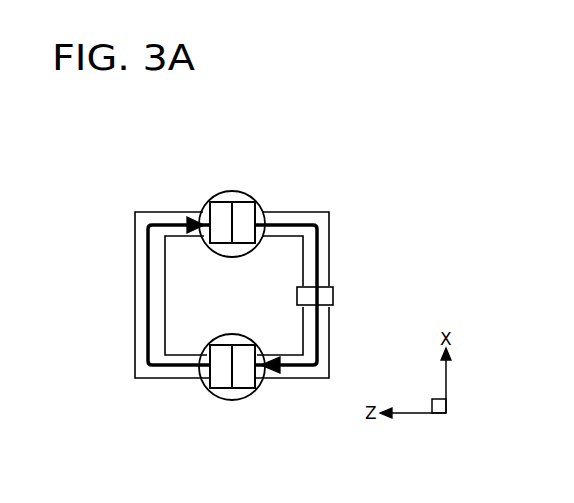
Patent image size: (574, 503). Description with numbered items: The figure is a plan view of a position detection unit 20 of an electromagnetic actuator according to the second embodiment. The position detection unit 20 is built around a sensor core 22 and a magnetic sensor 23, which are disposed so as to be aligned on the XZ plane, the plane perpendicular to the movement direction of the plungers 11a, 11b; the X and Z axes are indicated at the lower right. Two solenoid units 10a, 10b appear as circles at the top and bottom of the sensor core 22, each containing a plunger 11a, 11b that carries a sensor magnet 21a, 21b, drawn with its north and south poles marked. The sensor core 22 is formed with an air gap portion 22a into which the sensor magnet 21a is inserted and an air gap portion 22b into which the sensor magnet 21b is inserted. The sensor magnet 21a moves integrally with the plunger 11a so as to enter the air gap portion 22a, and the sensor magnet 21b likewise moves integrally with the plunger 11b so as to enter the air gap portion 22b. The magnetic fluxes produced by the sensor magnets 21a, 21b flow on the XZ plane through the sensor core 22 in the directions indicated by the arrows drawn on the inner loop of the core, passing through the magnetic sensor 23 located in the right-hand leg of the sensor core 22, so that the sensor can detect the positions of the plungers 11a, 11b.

The solenoid unit 10a is at (227, 401).
The solenoid unit 10b is at (219, 169).
The plunger 11a is at (236, 393).
The plunger 11b is at (231, 198).
The position detection unit 20 is at (128, 332).
The sensor magnet 21a is at (250, 378).
The sensor magnet 21b is at (250, 202).
The sensor core 22 is at (135, 257).
The air gap portion 22a is at (204, 385).
The air gap portion 22b is at (203, 212).
The magnetic sensor 23 is at (335, 296).